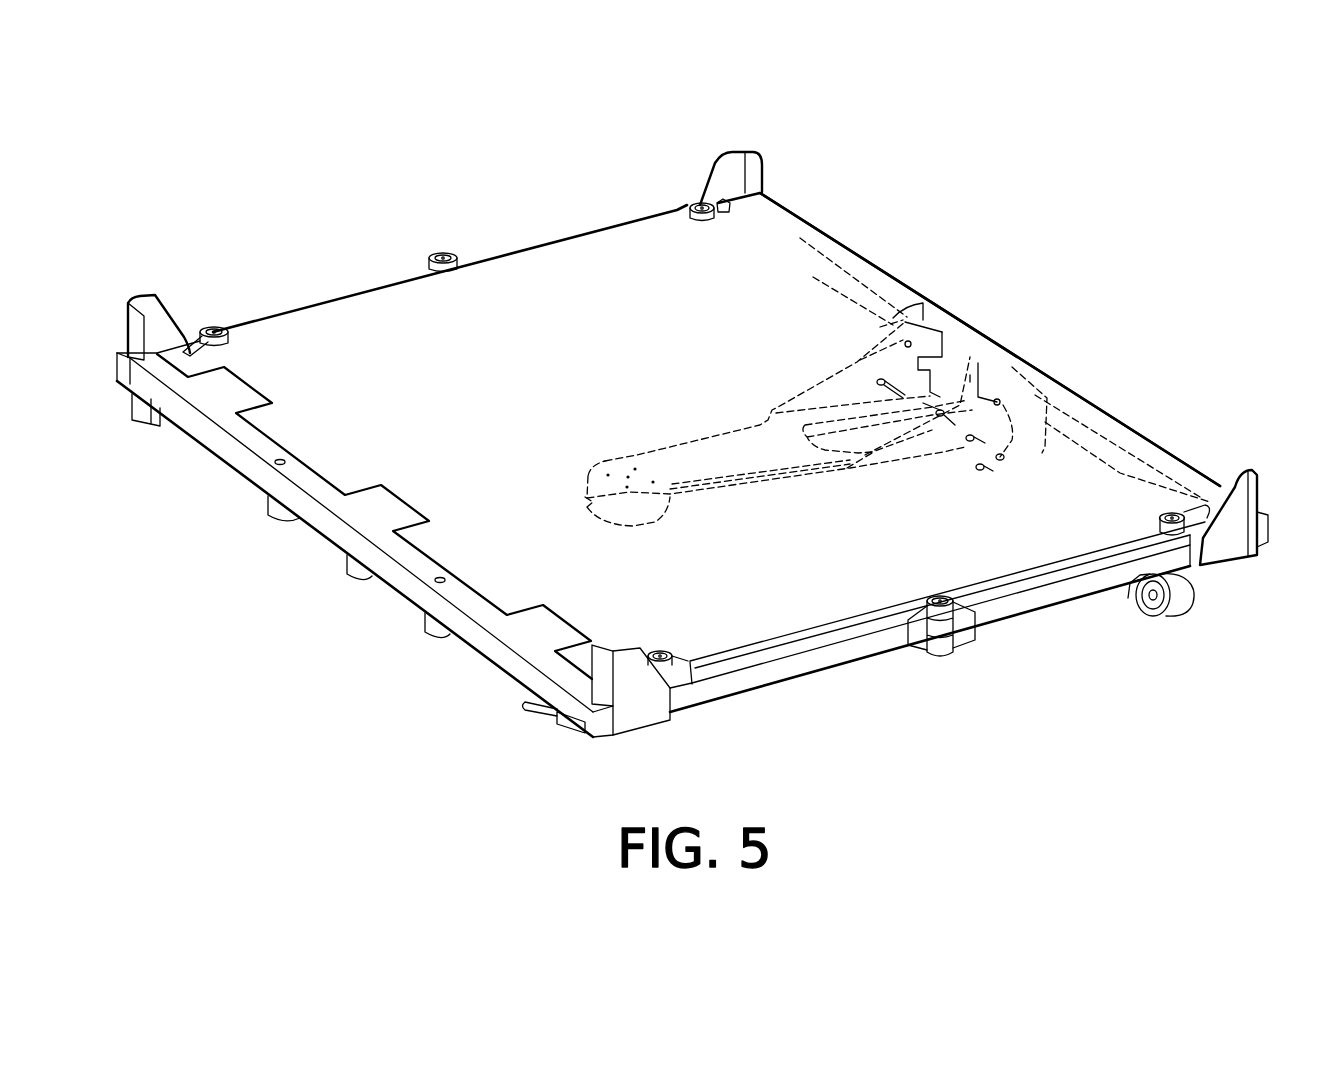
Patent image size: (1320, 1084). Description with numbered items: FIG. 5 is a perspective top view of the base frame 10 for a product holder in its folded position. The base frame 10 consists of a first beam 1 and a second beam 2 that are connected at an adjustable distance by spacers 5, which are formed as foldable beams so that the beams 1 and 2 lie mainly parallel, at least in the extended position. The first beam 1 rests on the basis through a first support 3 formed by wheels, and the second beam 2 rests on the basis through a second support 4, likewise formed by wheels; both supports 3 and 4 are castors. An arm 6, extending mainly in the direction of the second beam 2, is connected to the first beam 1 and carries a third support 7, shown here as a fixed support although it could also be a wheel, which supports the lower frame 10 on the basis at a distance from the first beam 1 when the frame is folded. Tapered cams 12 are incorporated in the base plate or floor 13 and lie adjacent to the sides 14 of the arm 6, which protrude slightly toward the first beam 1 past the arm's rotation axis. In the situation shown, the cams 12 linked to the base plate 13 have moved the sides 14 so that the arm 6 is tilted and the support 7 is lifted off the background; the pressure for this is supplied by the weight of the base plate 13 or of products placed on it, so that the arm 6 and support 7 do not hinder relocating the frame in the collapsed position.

The first beam 1 is at (1123, 438).
The second beam 2 is at (335, 532).
The first support 3 is at (1180, 598).
The second support 4 is at (184, 458).
The spacers 5 is at (304, 291).
The arm 6 is at (718, 452).
The third support 7 is at (578, 500).
The base frame 10 is at (1114, 225).
The tapered cams 12 is at (925, 330).
The base plate 13 is at (508, 292).
The sides of the arm 14 is at (858, 373).